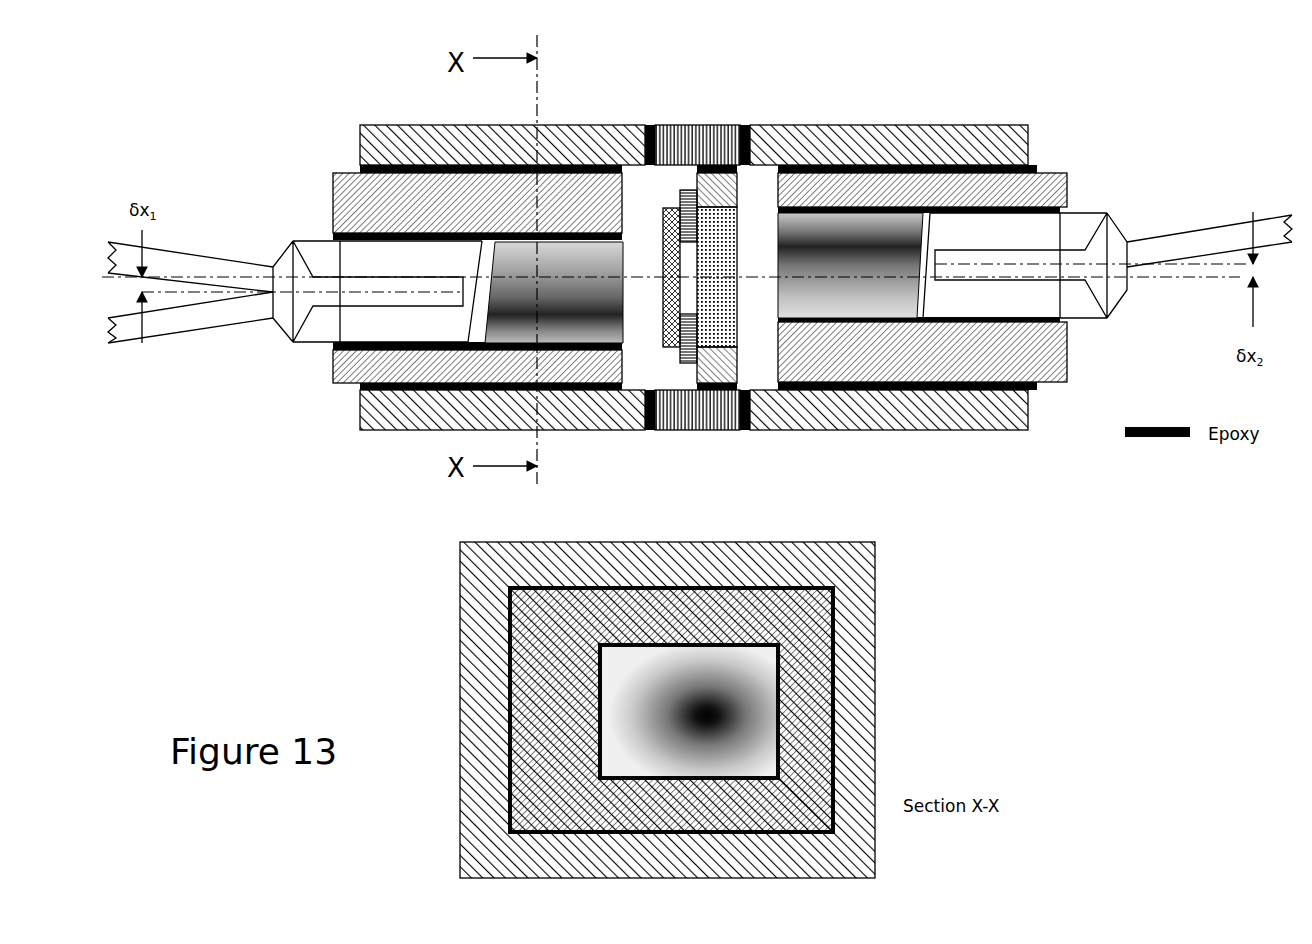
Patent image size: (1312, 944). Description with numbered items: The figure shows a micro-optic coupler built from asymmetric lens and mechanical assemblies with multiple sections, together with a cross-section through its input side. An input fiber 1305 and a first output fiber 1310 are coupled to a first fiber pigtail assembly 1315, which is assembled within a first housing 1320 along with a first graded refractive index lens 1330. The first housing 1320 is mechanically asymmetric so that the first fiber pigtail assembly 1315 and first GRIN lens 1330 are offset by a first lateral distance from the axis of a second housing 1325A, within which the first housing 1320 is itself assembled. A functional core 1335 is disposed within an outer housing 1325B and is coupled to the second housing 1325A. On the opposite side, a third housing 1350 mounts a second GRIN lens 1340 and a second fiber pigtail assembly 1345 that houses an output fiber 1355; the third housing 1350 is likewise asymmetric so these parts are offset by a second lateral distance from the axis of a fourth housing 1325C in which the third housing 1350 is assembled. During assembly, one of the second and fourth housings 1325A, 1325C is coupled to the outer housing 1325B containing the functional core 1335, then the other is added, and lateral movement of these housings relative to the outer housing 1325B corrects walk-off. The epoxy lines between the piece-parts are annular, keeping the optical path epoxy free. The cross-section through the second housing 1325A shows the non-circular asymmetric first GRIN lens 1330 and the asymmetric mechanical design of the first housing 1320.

The input fiber 1305 is at (190, 263).
The first output fiber 1310 is at (228, 307).
The first fiber pigtail assembly 1315 is at (313, 250).
The first housing 1320 is at (345, 165).
The second housing 1325A is at (617, 431).
The outer housing 1325B is at (718, 431).
The fourth housing 1325C is at (912, 431).
The first graded refractive index (GRIN) lens 1330 is at (593, 275).
The functional core 1335 is at (677, 193).
The second GRIN lens 1340 is at (885, 250).
The second fiber pigtail assembly 1345 is at (973, 240).
The third housing 1350 is at (1062, 170).
The output fiber 1355 is at (1200, 235).